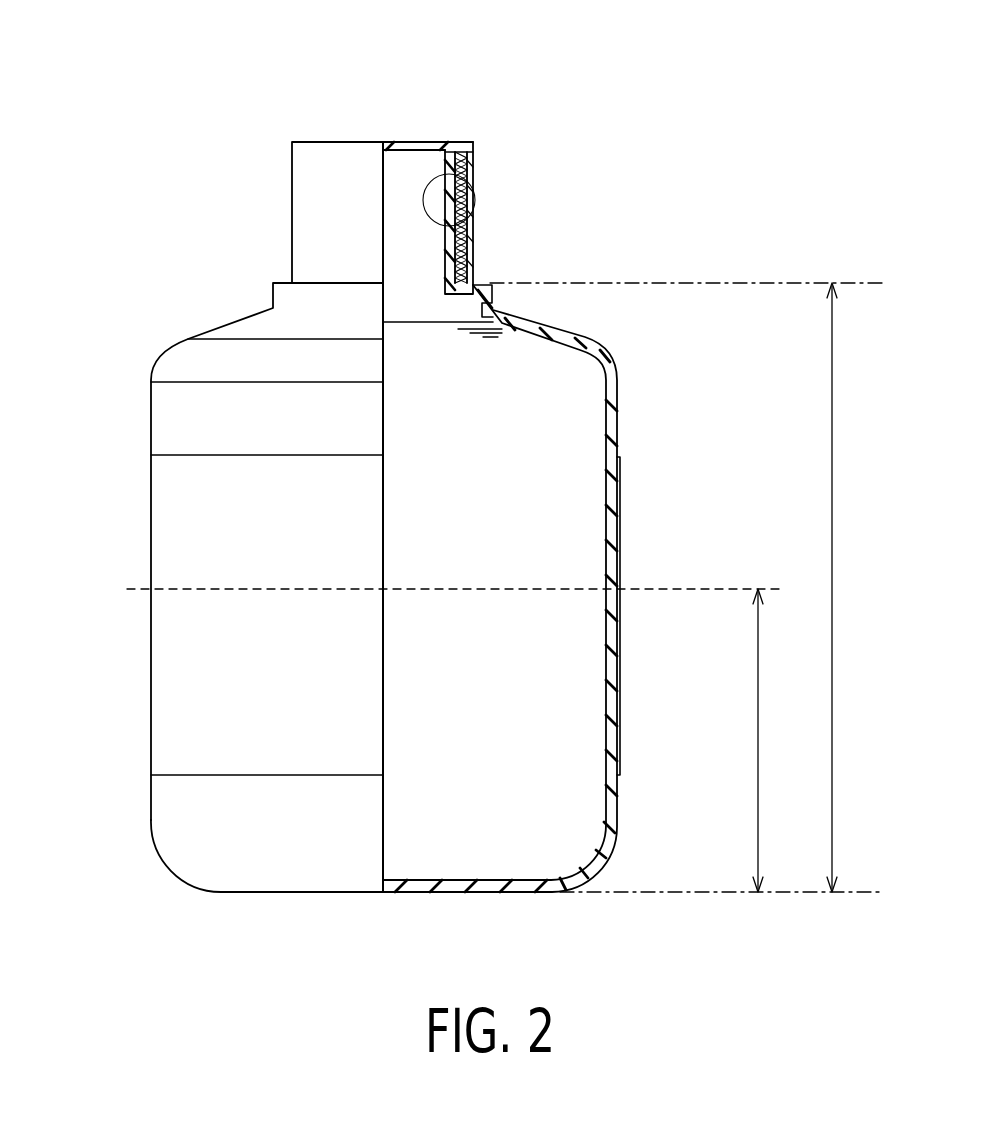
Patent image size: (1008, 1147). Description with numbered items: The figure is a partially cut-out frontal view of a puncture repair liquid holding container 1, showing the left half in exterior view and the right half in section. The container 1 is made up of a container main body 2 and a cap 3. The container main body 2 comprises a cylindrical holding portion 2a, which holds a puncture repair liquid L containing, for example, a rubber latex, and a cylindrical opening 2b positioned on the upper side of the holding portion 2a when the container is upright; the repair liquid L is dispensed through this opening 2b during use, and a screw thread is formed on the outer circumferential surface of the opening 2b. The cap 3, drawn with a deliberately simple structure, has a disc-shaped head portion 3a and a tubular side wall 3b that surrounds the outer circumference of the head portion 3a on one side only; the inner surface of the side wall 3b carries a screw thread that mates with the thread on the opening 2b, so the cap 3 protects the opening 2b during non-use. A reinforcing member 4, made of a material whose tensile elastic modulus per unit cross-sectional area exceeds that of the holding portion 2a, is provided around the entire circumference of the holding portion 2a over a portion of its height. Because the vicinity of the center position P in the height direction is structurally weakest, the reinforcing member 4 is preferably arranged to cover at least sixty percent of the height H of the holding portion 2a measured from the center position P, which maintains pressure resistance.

The puncture repair liquid holding container 1 is at (461, 463).
The container main body 2 is at (378, 518).
The holding portion 2a is at (615, 556).
The opening 2b is at (463, 177).
The cap 3 is at (378, 164).
The head portion 3a is at (420, 142).
The side wall 3b is at (511, 217).
The reinforcing member 4 is at (175, 676).
The center position P is at (150, 588).
The puncture repair liquid L is at (540, 360).
The height H is at (813, 587).